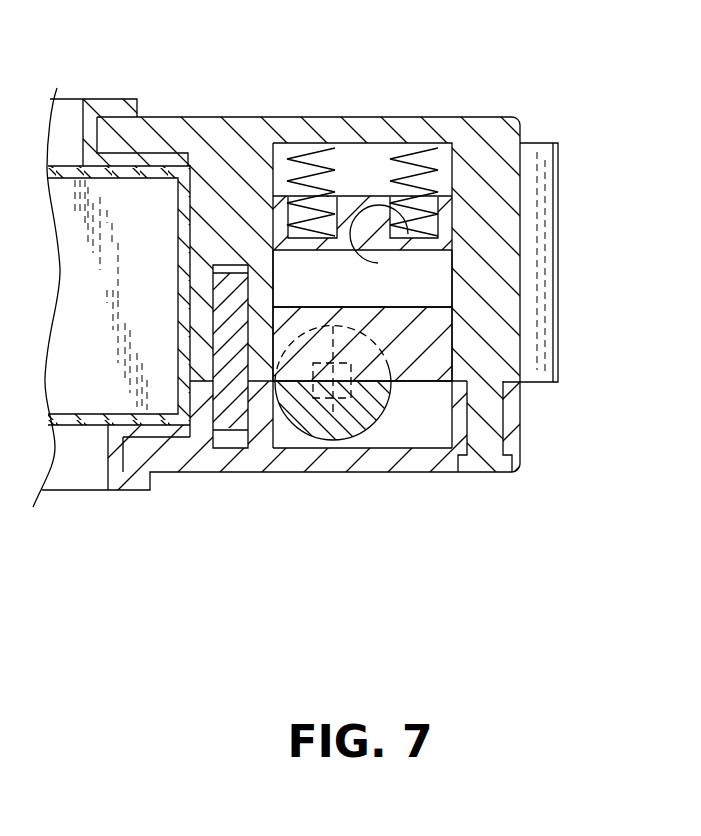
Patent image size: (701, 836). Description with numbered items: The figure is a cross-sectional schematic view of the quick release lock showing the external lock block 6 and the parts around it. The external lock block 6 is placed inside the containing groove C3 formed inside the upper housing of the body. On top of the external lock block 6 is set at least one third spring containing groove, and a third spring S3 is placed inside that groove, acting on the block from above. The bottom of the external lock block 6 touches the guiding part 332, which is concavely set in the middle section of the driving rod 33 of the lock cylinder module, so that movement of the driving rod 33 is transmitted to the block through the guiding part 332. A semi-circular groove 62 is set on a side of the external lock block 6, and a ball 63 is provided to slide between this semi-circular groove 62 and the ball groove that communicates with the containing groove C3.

The third spring S3 is at (305, 152).
The containing groove C3 is at (453, 177).
The ball 63 is at (392, 259).
The semi-circular groove 62 is at (433, 283).
The external lock block 6 is at (430, 343).
The driving rod 33 is at (307, 418).
The guiding part 332 is at (350, 396).